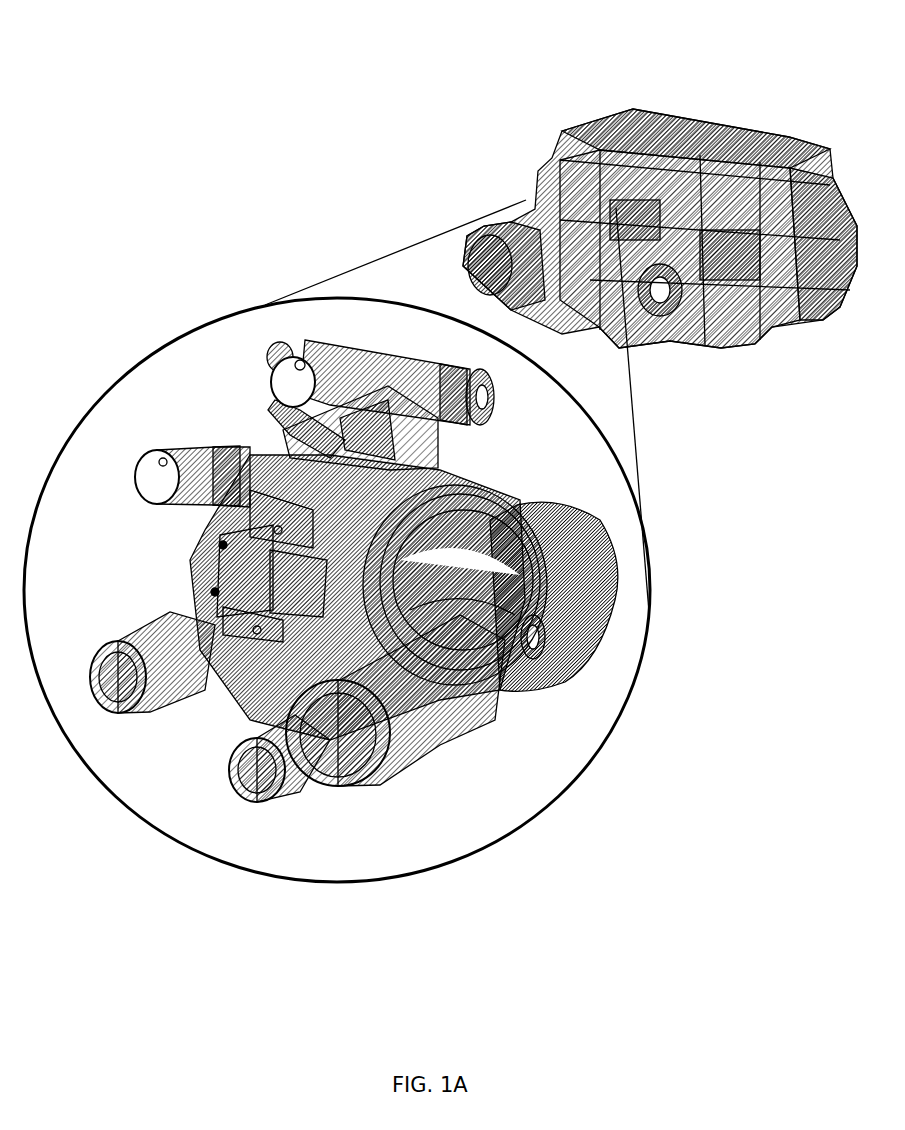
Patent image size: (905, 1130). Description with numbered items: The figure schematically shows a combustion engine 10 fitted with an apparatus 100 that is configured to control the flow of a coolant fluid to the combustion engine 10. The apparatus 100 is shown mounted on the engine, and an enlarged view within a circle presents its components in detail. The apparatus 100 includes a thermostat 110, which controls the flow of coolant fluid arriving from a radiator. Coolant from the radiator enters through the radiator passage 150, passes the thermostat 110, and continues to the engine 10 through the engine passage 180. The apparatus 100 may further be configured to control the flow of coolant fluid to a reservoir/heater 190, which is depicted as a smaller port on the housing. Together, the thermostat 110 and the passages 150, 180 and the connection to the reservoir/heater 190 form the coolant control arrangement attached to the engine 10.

The combustion engine 10 is at (705, 103).
The apparatus 100 is at (337, 587).
The thermostat 110 is at (240, 727).
The radiator passage 150 is at (390, 762).
The engine passage 180 is at (130, 682).
The reservoir/heater 190 is at (267, 787).